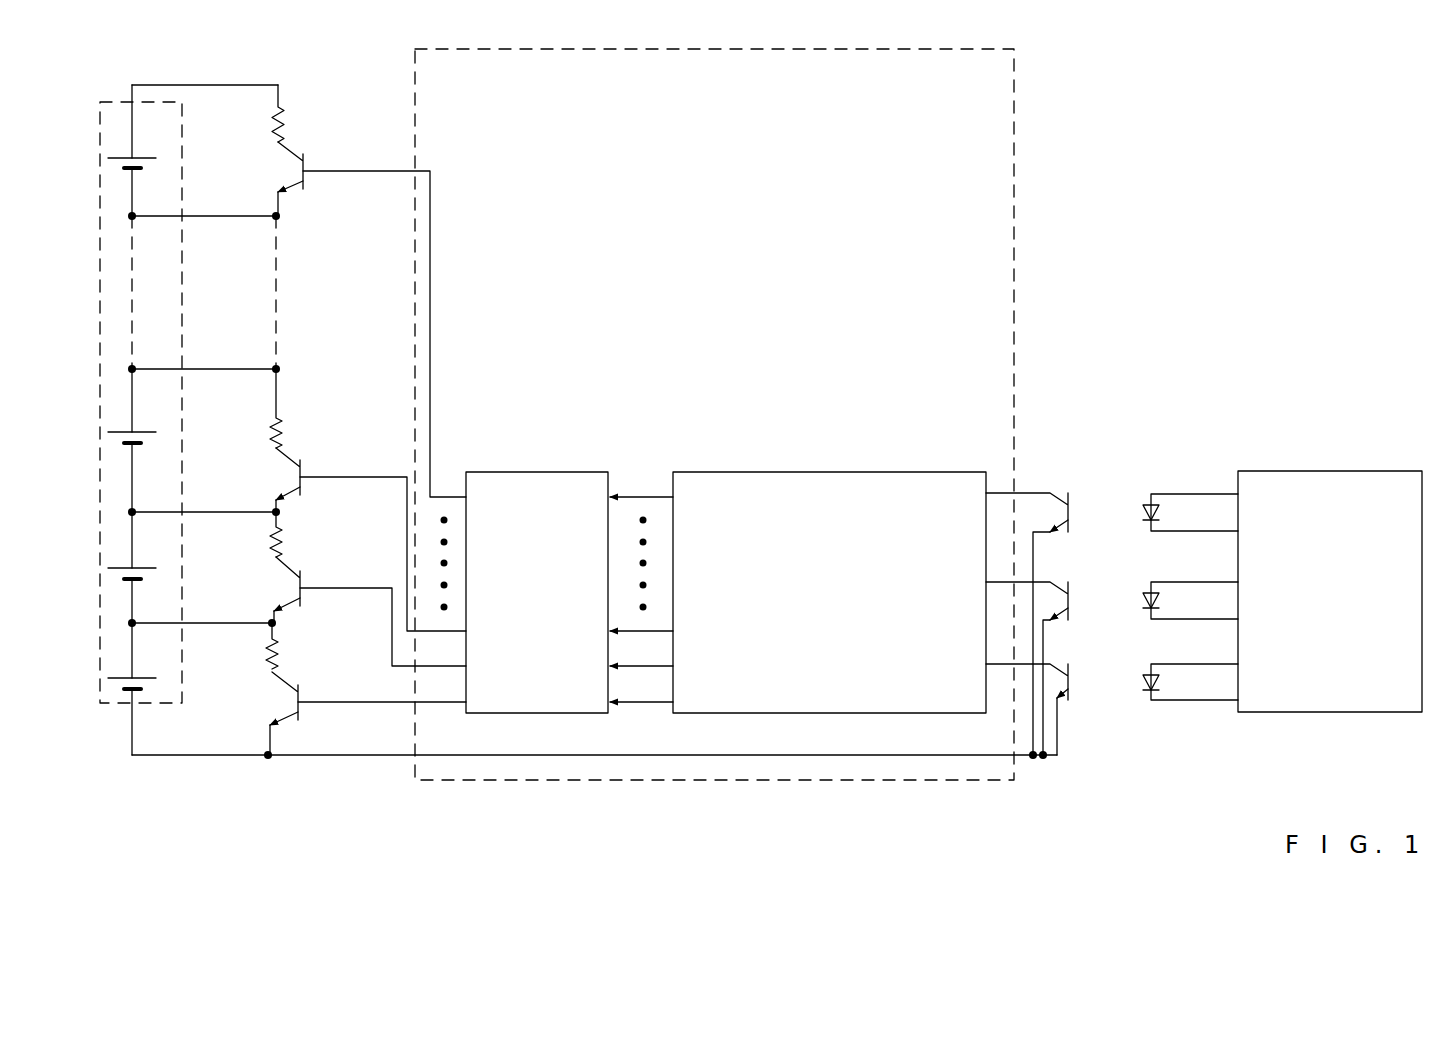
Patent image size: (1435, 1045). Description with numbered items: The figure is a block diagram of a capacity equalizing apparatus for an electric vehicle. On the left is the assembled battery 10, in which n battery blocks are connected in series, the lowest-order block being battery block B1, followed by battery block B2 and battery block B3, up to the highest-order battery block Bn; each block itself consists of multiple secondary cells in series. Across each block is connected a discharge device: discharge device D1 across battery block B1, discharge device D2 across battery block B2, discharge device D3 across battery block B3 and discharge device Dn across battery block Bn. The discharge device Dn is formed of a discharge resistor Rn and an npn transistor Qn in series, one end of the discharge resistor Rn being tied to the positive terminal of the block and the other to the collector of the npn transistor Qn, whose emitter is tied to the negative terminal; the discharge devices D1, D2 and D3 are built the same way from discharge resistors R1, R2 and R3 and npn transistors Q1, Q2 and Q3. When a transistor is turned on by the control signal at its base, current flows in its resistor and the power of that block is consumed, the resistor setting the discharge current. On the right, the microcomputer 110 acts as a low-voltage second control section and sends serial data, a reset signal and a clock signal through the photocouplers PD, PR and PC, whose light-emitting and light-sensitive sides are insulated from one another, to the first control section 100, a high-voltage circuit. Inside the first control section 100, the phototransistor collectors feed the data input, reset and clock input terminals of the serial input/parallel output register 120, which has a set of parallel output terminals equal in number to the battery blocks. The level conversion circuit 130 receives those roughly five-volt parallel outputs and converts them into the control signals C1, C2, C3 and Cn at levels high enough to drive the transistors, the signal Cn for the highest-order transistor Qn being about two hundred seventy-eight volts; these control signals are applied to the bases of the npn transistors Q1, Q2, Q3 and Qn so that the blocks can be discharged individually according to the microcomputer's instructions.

The assembled battery 10 is at (122, 703).
The first control section 100 is at (507, 49).
The microcomputer 110 is at (1258, 471).
The serial input/parallel output register 120 is at (696, 471).
The level conversion circuit 130 is at (499, 471).
The battery block Bn is at (140, 158).
The battery block B1 is at (140, 678).
The battery block B2 is at (140, 568).
The battery block B3 is at (140, 432).
The discharge resistor Rn is at (263, 113).
The discharge resistor R1 is at (257, 649).
The discharge resistor R2 is at (259, 534).
The discharge resistor R3 is at (259, 410).
The npn transistor Qn is at (271, 179).
The npn transistor Q1 is at (267, 713).
The npn transistor Q2 is at (268, 590).
The npn transistor Q3 is at (268, 480).
The discharge device Dn is at (303, 131).
The discharge device D1 is at (293, 657).
The discharge device D2 is at (292, 545).
The discharge device D3 is at (301, 438).
The control signal Cn is at (372, 171).
The control signal C1 is at (354, 702).
The control signal C2 is at (354, 588).
The control signal C3 is at (366, 477).
The photocoupler PD is at (1080, 517).
The photocoupler PR is at (1080, 606).
The photocoupler PC is at (1080, 688).